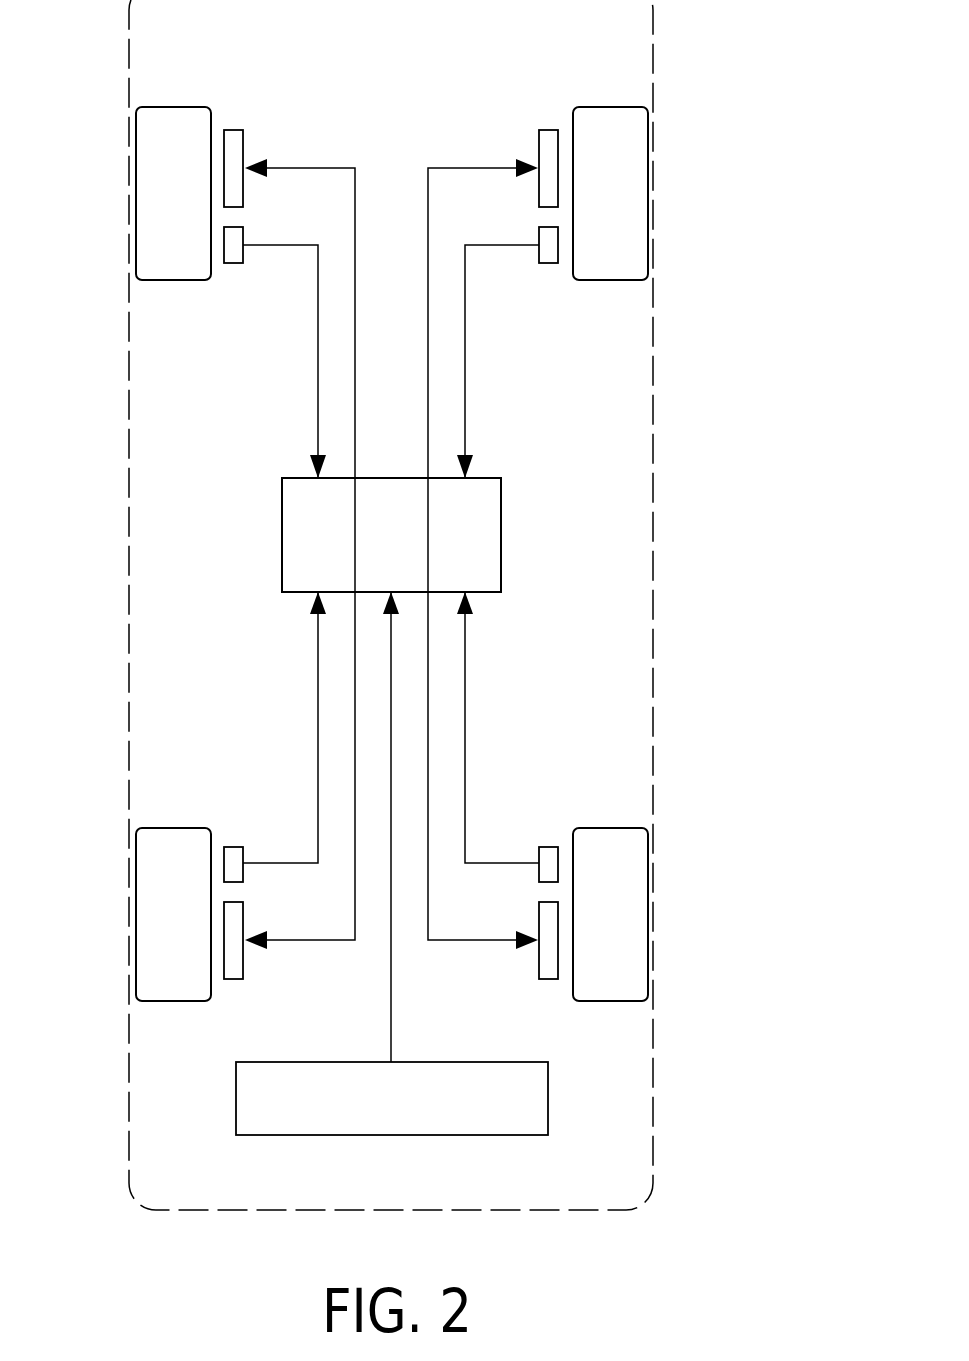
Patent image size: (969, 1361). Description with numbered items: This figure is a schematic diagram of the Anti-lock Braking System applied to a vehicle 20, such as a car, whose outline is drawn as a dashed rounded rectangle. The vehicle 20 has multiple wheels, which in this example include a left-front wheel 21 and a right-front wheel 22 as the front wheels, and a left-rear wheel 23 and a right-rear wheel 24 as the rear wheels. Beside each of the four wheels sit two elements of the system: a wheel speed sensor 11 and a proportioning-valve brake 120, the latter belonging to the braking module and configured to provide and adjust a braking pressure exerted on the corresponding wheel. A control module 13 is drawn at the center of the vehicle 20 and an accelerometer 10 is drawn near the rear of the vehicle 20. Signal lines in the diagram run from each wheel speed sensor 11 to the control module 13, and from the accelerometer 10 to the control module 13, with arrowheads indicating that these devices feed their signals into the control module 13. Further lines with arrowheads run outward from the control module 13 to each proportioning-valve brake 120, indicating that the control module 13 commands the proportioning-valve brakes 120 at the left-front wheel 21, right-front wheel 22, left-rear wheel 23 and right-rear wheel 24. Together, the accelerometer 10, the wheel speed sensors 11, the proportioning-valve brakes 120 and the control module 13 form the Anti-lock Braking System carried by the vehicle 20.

The accelerometer 10 is at (452, 1135).
The wheel speed sensor 11 is at (234, 250).
The control module 13 is at (501, 532).
The vehicle 20 is at (653, 508).
The left-front wheel 21 is at (157, 203).
The right-front wheel 22 is at (628, 205).
The left-rear wheel 23 is at (157, 905).
The right-rear wheel 24 is at (628, 905).
The proportioning-valve brake 120 is at (234, 140).